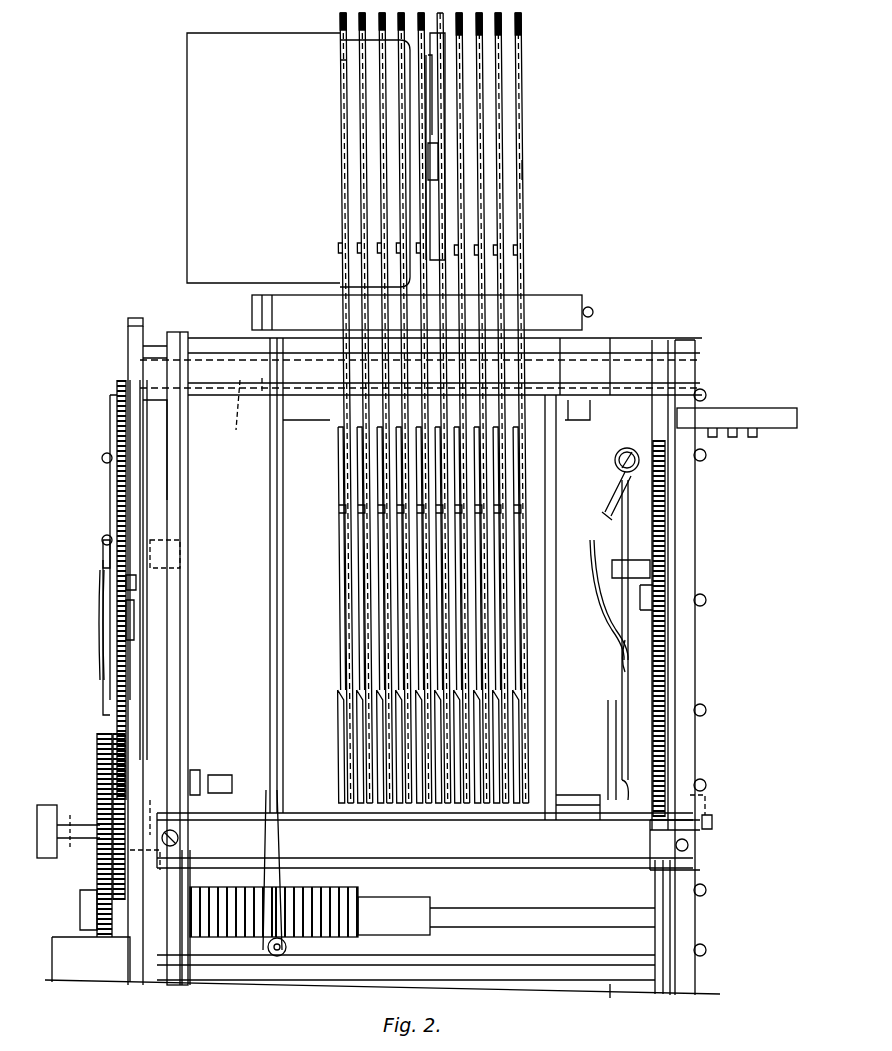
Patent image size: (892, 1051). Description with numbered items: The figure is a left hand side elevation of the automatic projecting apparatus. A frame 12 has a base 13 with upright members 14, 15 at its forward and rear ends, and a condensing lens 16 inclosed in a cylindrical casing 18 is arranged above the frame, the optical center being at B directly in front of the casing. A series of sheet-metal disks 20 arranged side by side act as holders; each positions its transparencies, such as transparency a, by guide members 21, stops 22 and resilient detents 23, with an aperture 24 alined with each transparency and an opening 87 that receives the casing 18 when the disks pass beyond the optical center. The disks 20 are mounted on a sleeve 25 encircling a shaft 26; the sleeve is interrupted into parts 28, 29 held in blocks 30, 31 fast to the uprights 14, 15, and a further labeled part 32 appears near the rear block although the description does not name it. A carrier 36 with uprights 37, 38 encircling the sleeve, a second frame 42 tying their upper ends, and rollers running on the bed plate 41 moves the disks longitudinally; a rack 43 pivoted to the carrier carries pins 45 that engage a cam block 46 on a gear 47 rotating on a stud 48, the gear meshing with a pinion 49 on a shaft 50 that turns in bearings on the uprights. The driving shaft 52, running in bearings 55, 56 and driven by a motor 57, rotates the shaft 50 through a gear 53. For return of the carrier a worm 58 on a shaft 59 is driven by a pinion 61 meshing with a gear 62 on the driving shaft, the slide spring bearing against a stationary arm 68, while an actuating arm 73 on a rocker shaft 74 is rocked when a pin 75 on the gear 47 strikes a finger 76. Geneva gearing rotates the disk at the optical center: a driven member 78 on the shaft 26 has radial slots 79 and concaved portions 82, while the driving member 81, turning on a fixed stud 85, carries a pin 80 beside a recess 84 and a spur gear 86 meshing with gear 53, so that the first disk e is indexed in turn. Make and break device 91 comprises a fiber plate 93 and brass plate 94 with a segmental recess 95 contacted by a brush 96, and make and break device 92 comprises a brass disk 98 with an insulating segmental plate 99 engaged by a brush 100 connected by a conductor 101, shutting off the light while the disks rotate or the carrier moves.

The frame 12 is at (382, 988).
The base 13 is at (616, 1002).
The upright member 14 is at (188, 550).
The upright member 15 is at (682, 345).
The condensing lens 16 is at (190, 148).
The cylindrical casing 18 is at (268, 46).
The disks 20 is at (414, 403).
The guide members 21 is at (338, 598).
The stops 22 is at (345, 388).
The resilient detents 23 is at (338, 703).
The aperture 24 is at (446, 80).
The sleeve 25 is at (262, 385).
The shaft 26 is at (234, 418).
The sleeve part 28 is at (230, 368).
The sleeve part 29 is at (590, 349).
The block 30 is at (176, 332).
The block 31 is at (660, 340).
The beam part 32 is at (622, 345).
The carrier 36 is at (264, 575).
The upright 37 is at (272, 648).
The upright 38 is at (550, 692).
The bed plate 41 is at (487, 868).
The second frame 42 is at (550, 295).
The rack 43 is at (776, 410).
The pins 45 is at (752, 438).
The cam block 46 is at (652, 592).
The gear 47 is at (666, 674).
The stud 48 is at (625, 672).
The pinion 49 is at (655, 822).
The shaft 50 is at (712, 822).
The driving shaft 52 is at (52, 805).
The gear 53 is at (125, 758).
The bearing 55 is at (76, 792).
The bearing 56 is at (146, 858).
The electric motor 57 is at (46, 858).
The worm 58 is at (358, 890).
The shaft 59 is at (538, 920).
The pinion 61 is at (104, 940).
The gear 62 is at (100, 750).
The stationary arm 68 is at (282, 838).
The actuating arm 73 is at (220, 775).
The rocker shaft 74 is at (568, 798).
The pin 75 is at (612, 566).
The finger 76 is at (612, 770).
The driven member 78 is at (128, 350).
The radial slots 79 is at (128, 322).
The pin 80 is at (136, 582).
The driving member 81 is at (133, 508).
The concaved portions 82 is at (140, 360).
The recess 84 is at (136, 600).
The fixed stud 85 is at (112, 553).
The spur gear 86 is at (112, 412).
The opening 87 is at (430, 133).
The make and break device 91 is at (110, 696).
The make and break device 92 is at (637, 793).
The plate 93 is at (118, 442).
The brass plate 94 is at (114, 496).
The segmental recess 95 is at (114, 474).
The brush 96 is at (100, 615).
The brass disk 98 is at (652, 560).
The segmental plate 99 is at (620, 720).
The brush 100 is at (604, 608).
The conductor 101 is at (604, 512).
The optical center B is at (437, 132).
The transparency a is at (522, 172).
The first disk e is at (340, 63).